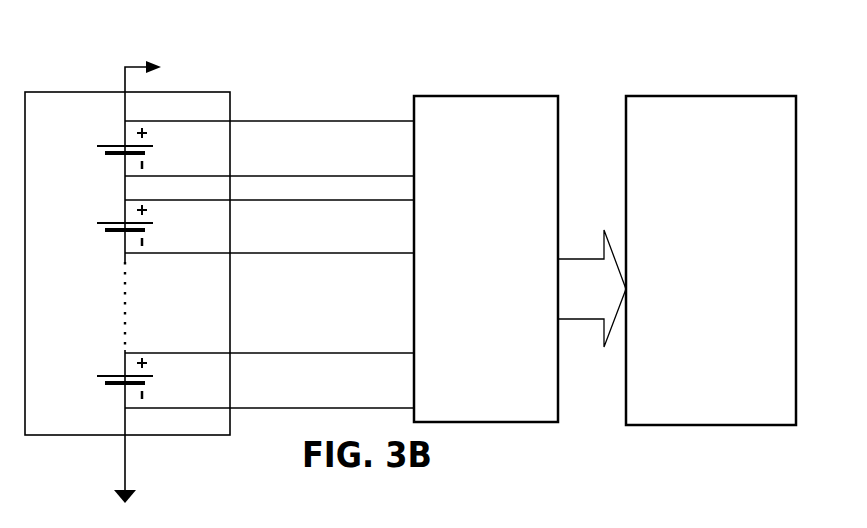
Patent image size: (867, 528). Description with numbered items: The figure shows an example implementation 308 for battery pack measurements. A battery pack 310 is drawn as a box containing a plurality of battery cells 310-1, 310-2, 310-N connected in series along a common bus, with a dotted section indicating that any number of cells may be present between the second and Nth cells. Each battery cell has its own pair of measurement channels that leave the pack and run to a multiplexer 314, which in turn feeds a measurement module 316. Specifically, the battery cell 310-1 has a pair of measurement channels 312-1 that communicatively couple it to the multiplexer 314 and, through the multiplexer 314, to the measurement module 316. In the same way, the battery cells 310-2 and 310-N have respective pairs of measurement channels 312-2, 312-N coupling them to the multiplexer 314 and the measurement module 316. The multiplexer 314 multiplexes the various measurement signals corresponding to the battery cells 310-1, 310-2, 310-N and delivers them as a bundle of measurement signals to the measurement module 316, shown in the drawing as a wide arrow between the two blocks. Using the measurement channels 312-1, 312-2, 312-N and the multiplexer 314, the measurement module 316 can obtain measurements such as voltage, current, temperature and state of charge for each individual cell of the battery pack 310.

The example implementation for battery pack measurements 308 is at (410, 260).
The battery pack 310 is at (188, 92).
The battery cell 310-1 is at (99, 148).
The battery cell 310-2 is at (99, 225).
The battery cell 310-N is at (99, 378).
The pair of measurement channels 312-1 is at (308, 121).
The pair of measurement channels 312-2 is at (325, 201).
The pair of measurement channels 312-N is at (310, 354).
The multiplexer 314 is at (482, 96).
The measurement module 316 is at (726, 96).